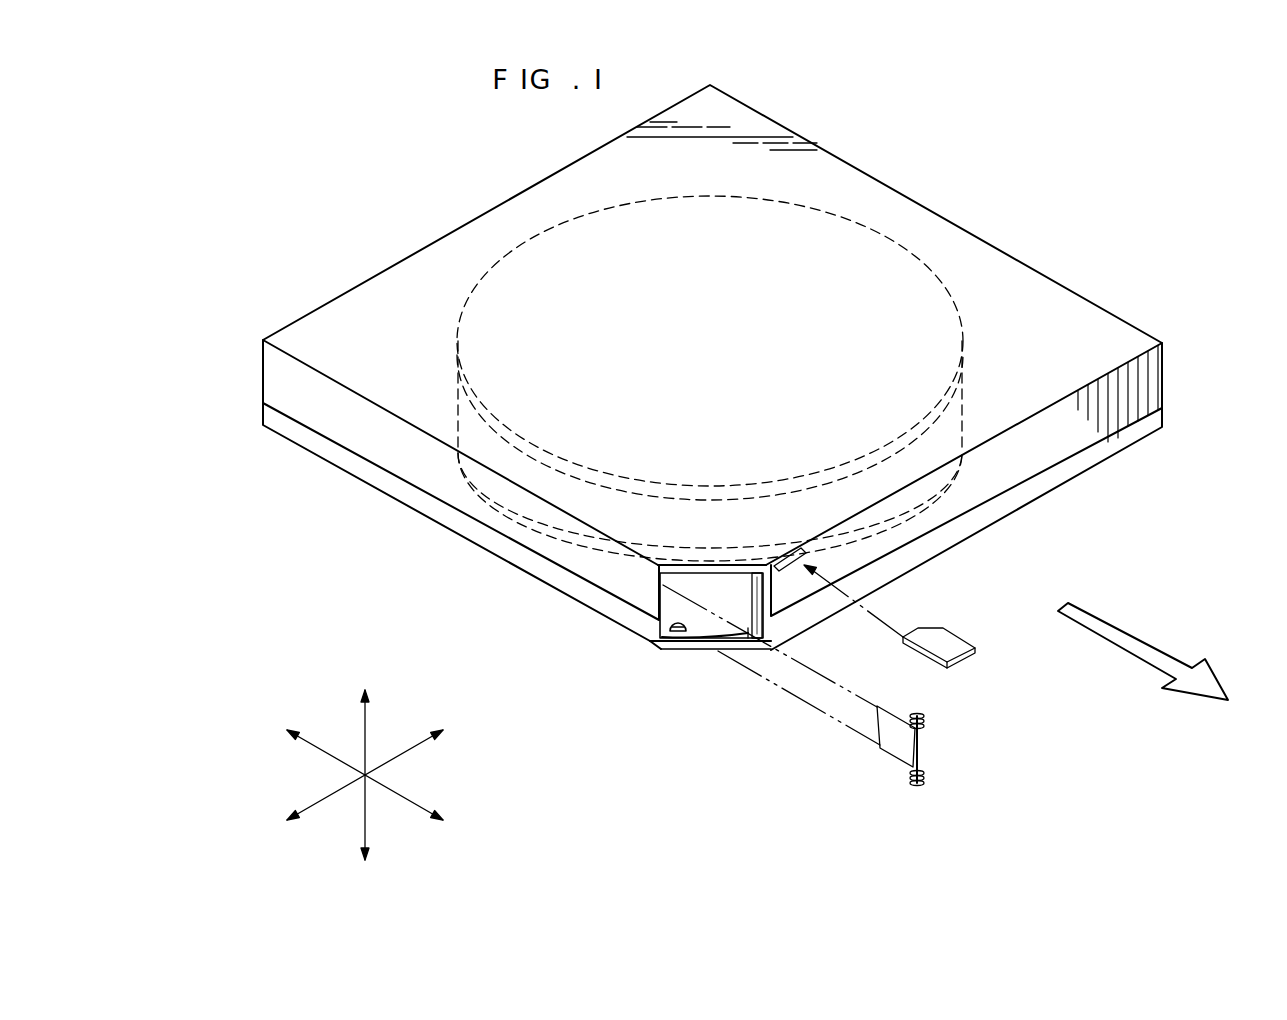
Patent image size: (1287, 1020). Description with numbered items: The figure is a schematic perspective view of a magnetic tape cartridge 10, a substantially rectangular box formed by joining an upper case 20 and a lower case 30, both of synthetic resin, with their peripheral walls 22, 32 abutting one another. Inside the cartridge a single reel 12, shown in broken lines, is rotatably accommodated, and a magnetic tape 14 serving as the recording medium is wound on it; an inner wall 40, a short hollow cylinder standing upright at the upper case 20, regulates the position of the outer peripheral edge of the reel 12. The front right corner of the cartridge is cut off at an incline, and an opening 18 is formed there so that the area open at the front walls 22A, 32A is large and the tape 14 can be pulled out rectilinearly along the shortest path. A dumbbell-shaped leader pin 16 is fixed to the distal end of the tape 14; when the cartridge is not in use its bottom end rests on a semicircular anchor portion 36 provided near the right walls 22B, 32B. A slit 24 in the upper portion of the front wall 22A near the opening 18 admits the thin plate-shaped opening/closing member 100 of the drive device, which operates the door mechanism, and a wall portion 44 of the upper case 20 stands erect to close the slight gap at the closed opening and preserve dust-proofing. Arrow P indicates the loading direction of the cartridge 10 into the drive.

The magnetic tape cartridge 10 is at (1007, 170).
The reel 12 is at (766, 280).
The magnetic tape 14 is at (897, 745).
The leader pin 16 is at (920, 746).
The opening 18 is at (700, 652).
The upper case 20 is at (368, 277).
The peripheral wall 22 is at (1163, 374).
The front wall 22A is at (968, 487).
The right wall 22B is at (305, 396).
The slit 24 is at (800, 547).
The lower case 30 is at (258, 410).
The peripheral wall 32 is at (1163, 413).
The front wall 32A is at (945, 536).
The right wall 32B is at (380, 475).
The anchor portion 36 is at (676, 635).
The inner wall 40 is at (764, 622).
The wall portion 44 is at (708, 572).
The opening/closing member 100 is at (960, 668).